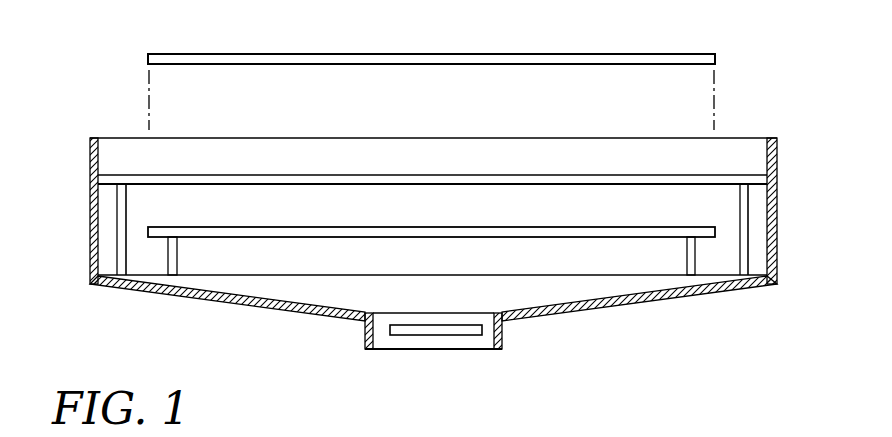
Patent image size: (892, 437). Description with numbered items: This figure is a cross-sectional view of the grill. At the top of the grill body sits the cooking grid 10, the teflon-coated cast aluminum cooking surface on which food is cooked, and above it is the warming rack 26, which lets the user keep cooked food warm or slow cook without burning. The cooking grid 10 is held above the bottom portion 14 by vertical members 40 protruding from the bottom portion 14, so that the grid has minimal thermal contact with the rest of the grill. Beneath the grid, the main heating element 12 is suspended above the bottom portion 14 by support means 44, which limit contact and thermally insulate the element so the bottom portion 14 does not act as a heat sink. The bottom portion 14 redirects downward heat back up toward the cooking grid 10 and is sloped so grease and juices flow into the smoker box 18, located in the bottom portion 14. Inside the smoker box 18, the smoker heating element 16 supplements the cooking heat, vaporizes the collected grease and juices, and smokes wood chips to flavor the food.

The cooking grid 10 is at (756, 175).
The main heating element 12 is at (714, 238).
The bottom portion 14 is at (622, 298).
The smoker heating element 16 is at (417, 336).
The smoker box 18 is at (503, 338).
The warming rack 26 is at (612, 53).
The vertical members 40 is at (122, 216).
The support means 44 is at (169, 262).